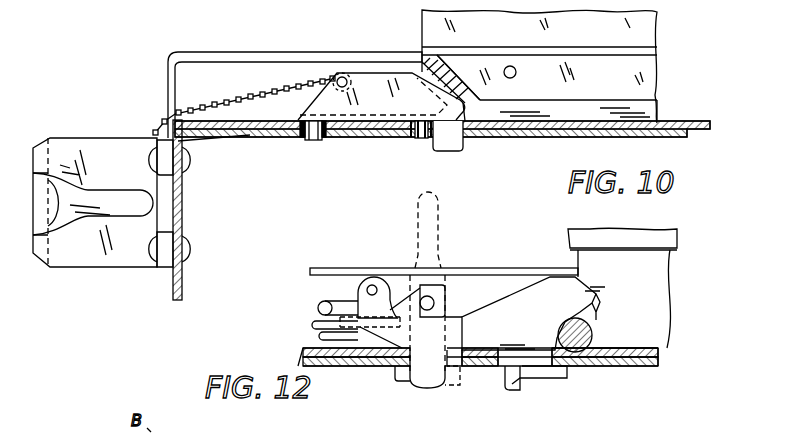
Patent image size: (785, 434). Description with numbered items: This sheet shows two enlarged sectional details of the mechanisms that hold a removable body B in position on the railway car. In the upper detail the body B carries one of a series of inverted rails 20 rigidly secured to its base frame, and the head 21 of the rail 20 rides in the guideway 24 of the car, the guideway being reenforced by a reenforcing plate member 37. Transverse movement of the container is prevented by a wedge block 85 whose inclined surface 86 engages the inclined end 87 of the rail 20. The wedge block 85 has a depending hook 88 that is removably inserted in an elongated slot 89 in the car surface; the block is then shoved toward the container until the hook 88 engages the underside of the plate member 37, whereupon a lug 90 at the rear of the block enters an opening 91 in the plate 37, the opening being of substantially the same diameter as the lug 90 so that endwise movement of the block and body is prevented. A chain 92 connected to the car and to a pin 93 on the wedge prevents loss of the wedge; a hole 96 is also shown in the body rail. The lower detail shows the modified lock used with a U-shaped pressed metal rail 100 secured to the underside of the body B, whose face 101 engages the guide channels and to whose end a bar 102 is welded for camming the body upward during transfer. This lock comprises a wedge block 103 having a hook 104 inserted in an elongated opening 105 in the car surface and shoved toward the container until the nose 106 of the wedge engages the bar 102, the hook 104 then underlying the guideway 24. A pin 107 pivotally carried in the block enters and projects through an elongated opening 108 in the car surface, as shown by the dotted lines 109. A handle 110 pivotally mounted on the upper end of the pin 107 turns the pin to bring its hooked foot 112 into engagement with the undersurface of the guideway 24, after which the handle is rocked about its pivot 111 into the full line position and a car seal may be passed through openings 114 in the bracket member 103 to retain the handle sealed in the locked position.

In FIG. 10, the inverted rail 20 is at (658, 80).
In FIG. 10, the rail head 21 is at (660, 112).
In FIG. 12, the guideway 24 is at (660, 357).
In FIG. 10, the reenforcing plate member 37 is at (490, 138).
In FIG. 10, the wedge block 85 is at (381, 96).
In FIG. 10, the inclined surface 86 is at (458, 101).
In FIG. 10, the inclined end 87 is at (428, 62).
In FIG. 10, the depending hook 88 is at (447, 151).
In FIG. 10, the elongated slot 89 is at (421, 139).
In FIG. 10, the lug 90 is at (313, 141).
In FIG. 10, the opening 91 is at (303, 129).
In FIG. 10, the chain 92 is at (254, 96).
In FIG. 10, the pin 93 is at (343, 77).
In FIG. 10, the hole 96 is at (509, 66).
In FIG. 12, the U-shaped pressed metal rail 100 is at (668, 288).
In FIG. 12, the face 101 is at (660, 349).
In FIG. 12, the bar 102 is at (593, 326).
In FIG. 12, the wedge block 103 is at (533, 313).
In FIG. 12, the hook 104 is at (555, 380).
In FIG. 12, the elongated opening 105 is at (510, 376).
In FIG. 12, the nose 106 is at (594, 306).
In FIG. 12, the pin 107 is at (427, 372).
In FIG. 12, the elongated opening 108 is at (457, 350).
In FIG. 12, the dotted lines 109 is at (456, 383).
In FIG. 12, the handle 110 is at (318, 308).
In FIG. 12, the pivot 111 is at (440, 303).
In FIG. 12, the hooked foot 112 is at (397, 379).
In FIG. 12, the openings 114 is at (373, 284).
In FIG. 10, the body B is at (659, 33).
In FIG. 12, the body B is at (679, 242).